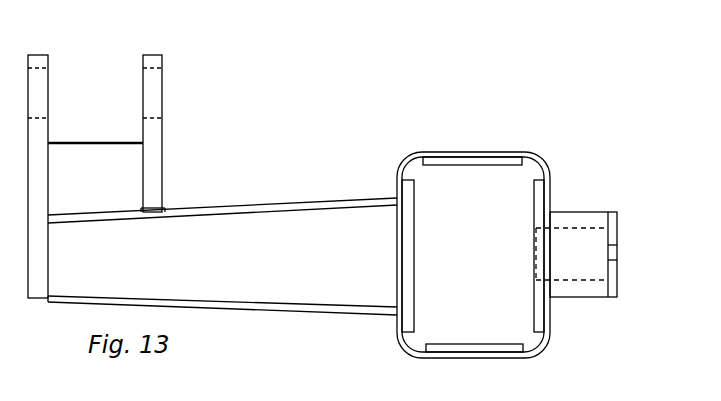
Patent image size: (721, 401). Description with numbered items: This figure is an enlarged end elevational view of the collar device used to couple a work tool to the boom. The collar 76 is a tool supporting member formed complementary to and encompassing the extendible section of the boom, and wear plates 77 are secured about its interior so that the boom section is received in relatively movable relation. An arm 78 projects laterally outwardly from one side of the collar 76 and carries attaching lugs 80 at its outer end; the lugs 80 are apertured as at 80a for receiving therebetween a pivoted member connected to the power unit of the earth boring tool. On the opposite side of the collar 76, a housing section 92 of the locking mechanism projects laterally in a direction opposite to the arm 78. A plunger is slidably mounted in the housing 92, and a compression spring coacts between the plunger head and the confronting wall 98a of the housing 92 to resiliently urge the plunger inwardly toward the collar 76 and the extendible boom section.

The collar 76 is at (523, 150).
The wear plates 77 is at (462, 167).
The arm 78 is at (222, 207).
The attaching lugs 80 is at (143, 139).
The apertures 80a is at (148, 103).
The housing section 92 is at (590, 210).
The confronting wall 98a is at (612, 240).